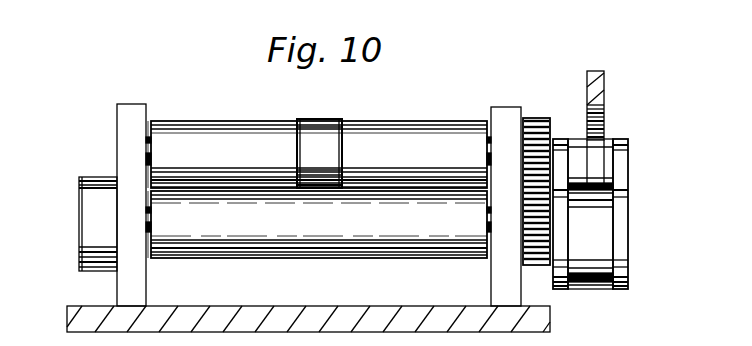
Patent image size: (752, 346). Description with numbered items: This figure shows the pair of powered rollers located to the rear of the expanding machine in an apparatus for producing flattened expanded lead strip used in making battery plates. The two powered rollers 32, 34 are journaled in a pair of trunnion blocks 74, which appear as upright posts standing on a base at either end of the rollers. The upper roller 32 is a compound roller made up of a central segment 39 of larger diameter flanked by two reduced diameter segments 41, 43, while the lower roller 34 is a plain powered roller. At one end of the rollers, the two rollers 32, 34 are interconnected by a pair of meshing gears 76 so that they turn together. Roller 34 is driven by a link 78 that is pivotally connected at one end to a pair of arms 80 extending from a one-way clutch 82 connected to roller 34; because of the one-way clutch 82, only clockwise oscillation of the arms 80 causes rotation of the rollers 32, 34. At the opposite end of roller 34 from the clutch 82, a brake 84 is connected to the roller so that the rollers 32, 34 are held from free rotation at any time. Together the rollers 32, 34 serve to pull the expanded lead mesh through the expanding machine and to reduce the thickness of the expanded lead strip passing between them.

The powered roller 32 is at (318, 133).
The powered roller 34 is at (321, 238).
The central segment 39 is at (328, 130).
The reduced diameter segment 41 is at (416, 137).
The reduced diameter segment 43 is at (193, 137).
The trunnion blocks 74 is at (121, 140).
The meshing gears 76 is at (540, 117).
The link 78 is at (598, 95).
The arms 80 is at (553, 288).
The one-way clutch 82 is at (603, 235).
The brake 84 is at (88, 227).